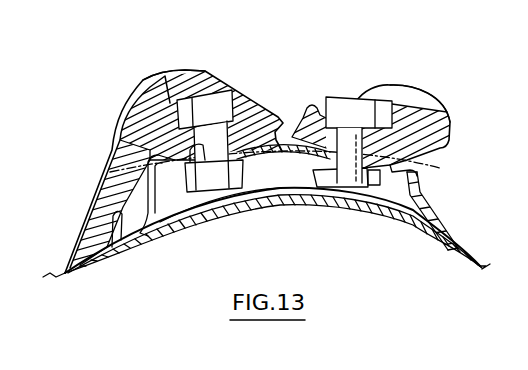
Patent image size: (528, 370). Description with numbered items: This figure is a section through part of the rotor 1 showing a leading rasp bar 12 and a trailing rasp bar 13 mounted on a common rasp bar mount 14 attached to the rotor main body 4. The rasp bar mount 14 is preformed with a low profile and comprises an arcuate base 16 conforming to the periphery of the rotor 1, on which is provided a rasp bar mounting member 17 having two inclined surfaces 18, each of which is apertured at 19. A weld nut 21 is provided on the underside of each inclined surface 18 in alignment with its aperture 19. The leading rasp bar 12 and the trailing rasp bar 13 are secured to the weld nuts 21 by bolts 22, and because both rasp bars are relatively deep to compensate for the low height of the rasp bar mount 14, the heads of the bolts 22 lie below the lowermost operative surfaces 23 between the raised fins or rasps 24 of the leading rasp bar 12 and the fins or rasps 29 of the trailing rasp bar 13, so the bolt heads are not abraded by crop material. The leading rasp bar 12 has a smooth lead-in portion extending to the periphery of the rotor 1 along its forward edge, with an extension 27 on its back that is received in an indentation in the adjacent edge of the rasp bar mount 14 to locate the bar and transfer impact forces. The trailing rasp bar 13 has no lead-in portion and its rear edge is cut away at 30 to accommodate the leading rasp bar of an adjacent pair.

The rotor 1 is at (474, 252).
The rotor main body 4 is at (392, 222).
The leading rasp bar 12 is at (204, 63).
The trailing rasp bar 13 is at (419, 81).
The rasp bar mount 14 is at (440, 208).
The arcuate base 16 is at (184, 210).
The rasp bar mounting member 17 is at (140, 240).
The inclined surface 18 is at (300, 158).
The aperture 19 is at (200, 143).
The weld nut 21 is at (310, 183).
The bolt 22 is at (357, 102).
The lowermost operative surface 23 is at (217, 88).
The fins or rasps 24 is at (230, 102).
The extension 27 is at (105, 258).
The fins or rasps 29 is at (445, 105).
The cut-away 30 is at (428, 156).